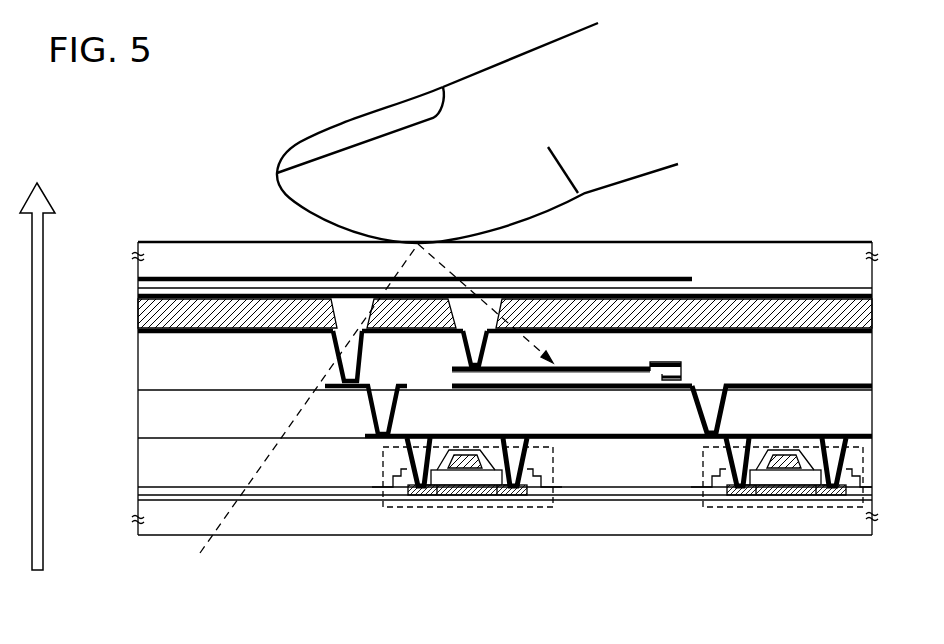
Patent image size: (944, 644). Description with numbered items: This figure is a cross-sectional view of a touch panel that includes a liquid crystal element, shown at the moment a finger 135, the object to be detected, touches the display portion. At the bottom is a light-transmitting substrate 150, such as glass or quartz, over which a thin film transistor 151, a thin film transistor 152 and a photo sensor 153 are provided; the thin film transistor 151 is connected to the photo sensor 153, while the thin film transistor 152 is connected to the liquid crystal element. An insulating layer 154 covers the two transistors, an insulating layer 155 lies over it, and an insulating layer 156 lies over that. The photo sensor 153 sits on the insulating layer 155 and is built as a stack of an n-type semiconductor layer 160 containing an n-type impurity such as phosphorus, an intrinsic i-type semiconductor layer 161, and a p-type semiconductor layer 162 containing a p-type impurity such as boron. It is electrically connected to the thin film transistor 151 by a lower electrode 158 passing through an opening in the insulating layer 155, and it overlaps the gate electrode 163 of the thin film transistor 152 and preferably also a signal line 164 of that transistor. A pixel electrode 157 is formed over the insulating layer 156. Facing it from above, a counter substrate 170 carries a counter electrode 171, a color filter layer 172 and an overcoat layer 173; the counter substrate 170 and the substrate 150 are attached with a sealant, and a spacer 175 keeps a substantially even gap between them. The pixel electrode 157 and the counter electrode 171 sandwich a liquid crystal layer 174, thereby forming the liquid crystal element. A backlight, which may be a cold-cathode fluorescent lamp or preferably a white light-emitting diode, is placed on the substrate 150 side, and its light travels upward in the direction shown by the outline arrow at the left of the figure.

The finger 135 is at (480, 82).
The substrate 150 is at (835, 530).
The thin film transistor 151 is at (787, 507).
The thin film transistor 152 is at (463, 513).
The photo sensor 153 is at (662, 412).
The insulating layer 154 is at (144, 460).
The insulating layer 155 is at (144, 414).
The insulating layer 156 is at (144, 376).
The pixel electrode 157 is at (172, 329).
The lower electrode 158 is at (688, 390).
The n-type semiconductor layer 160 is at (607, 383).
The i-type semiconductor layer 161 is at (622, 364).
The p-type semiconductor layer 162 is at (641, 376).
The gate electrode 163 is at (462, 462).
The signal line 164 is at (585, 392).
The counter substrate 170 is at (836, 250).
The counter electrode 171 is at (187, 293).
The color filter layer 172 is at (171, 280).
The overcoat layer 173 is at (138, 285).
The liquid crystal layer 174 is at (140, 316).
The spacer 175 is at (348, 314).